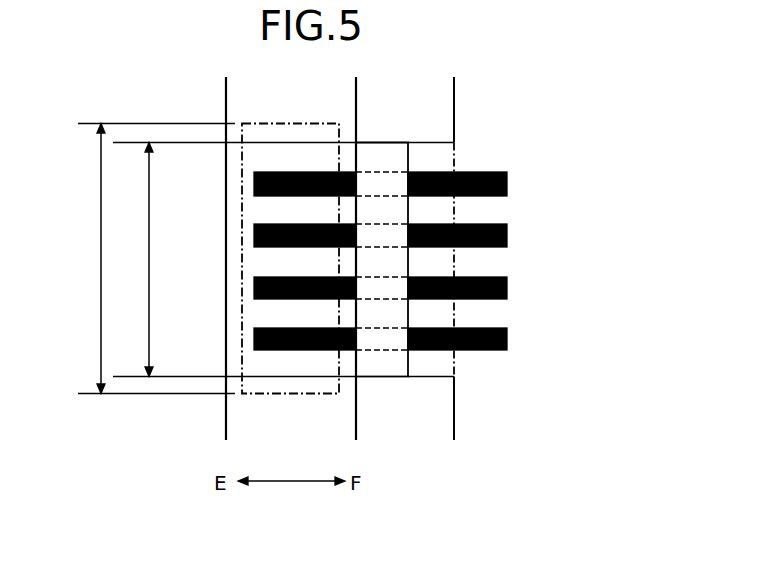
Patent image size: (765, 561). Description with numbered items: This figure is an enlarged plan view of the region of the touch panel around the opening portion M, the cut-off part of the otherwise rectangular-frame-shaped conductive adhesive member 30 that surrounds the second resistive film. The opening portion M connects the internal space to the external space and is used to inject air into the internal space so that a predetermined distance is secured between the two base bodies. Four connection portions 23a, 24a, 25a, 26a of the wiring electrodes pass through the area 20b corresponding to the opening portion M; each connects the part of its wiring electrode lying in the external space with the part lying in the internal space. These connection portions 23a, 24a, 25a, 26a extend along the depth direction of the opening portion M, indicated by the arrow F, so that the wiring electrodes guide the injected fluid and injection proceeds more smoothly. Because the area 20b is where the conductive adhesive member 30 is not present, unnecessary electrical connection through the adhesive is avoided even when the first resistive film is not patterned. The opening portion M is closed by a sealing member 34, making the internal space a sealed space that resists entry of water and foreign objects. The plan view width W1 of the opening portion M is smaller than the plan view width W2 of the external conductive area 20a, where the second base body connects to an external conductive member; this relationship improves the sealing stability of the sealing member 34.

The external conductive area 20a is at (240, 264).
The area corresponding to the opening portion 20b is at (431, 379).
The connection portion 23a is at (423, 197).
The connection portion 24a is at (434, 351).
The connection portion 25a is at (432, 300).
The connection portion 26a is at (430, 248).
The conductive adhesive member 30 is at (455, 111).
The sealing member 34 is at (383, 167).
The opening portion M is at (440, 144).
The plan view width of the opening portion W1 is at (132, 260).
The plan view width of the external conductive area W2 is at (85, 259).